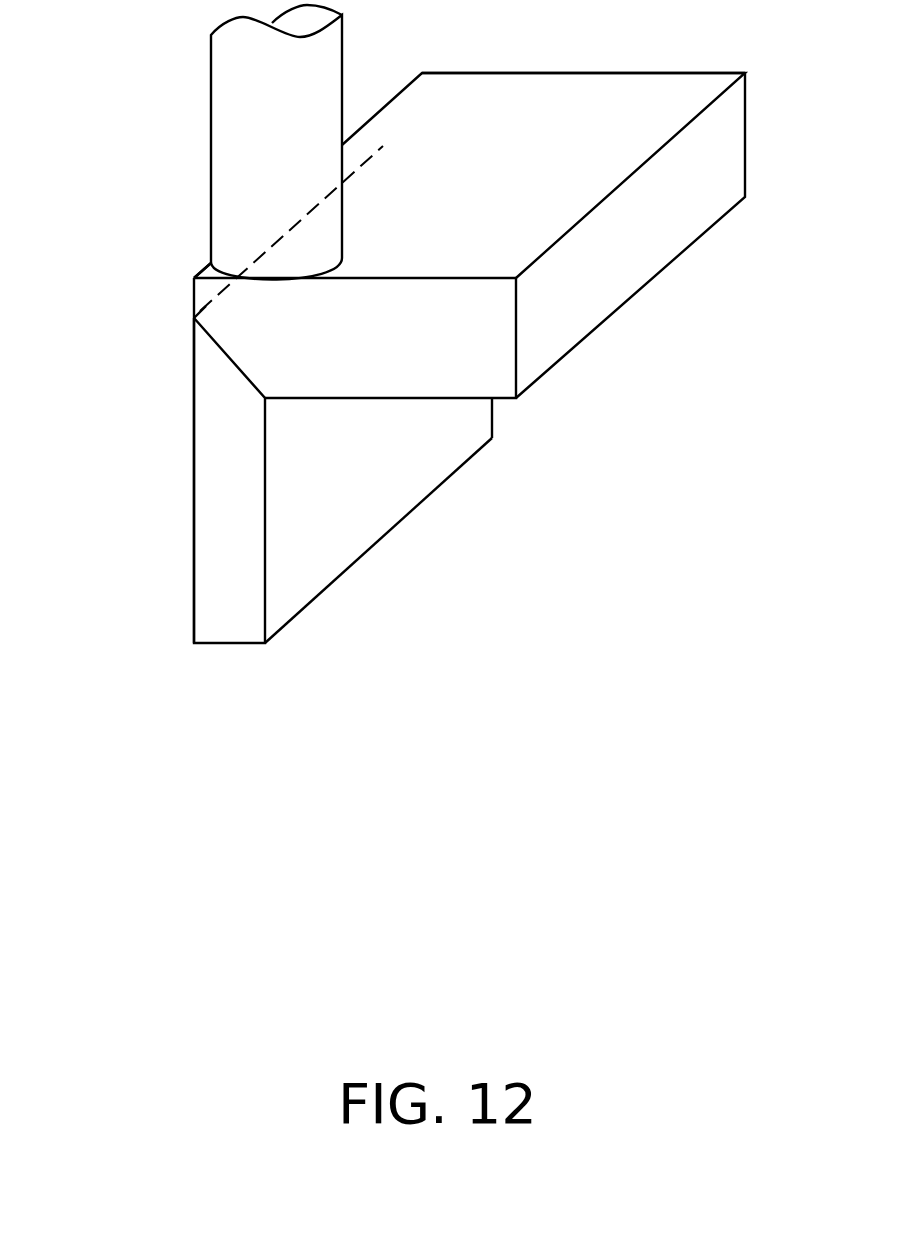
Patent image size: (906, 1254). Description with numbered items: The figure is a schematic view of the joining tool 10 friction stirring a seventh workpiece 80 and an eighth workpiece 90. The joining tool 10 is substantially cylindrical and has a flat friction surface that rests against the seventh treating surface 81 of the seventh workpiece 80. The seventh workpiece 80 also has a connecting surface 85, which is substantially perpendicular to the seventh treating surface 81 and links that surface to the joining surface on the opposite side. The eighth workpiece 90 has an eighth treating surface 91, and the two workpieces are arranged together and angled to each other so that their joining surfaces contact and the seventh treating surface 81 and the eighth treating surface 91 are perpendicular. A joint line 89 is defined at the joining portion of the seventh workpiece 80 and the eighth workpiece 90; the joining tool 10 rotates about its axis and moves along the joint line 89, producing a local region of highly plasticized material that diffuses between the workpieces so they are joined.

The joining tool 10 is at (254, 115).
The seventh workpiece 80 is at (662, 212).
The seventh treating surface 81 is at (576, 93).
The connecting surface 85 is at (187, 256).
The joint line 89 is at (200, 304).
The eighth workpiece 90 is at (222, 595).
The eighth treating surface 91 is at (178, 503).